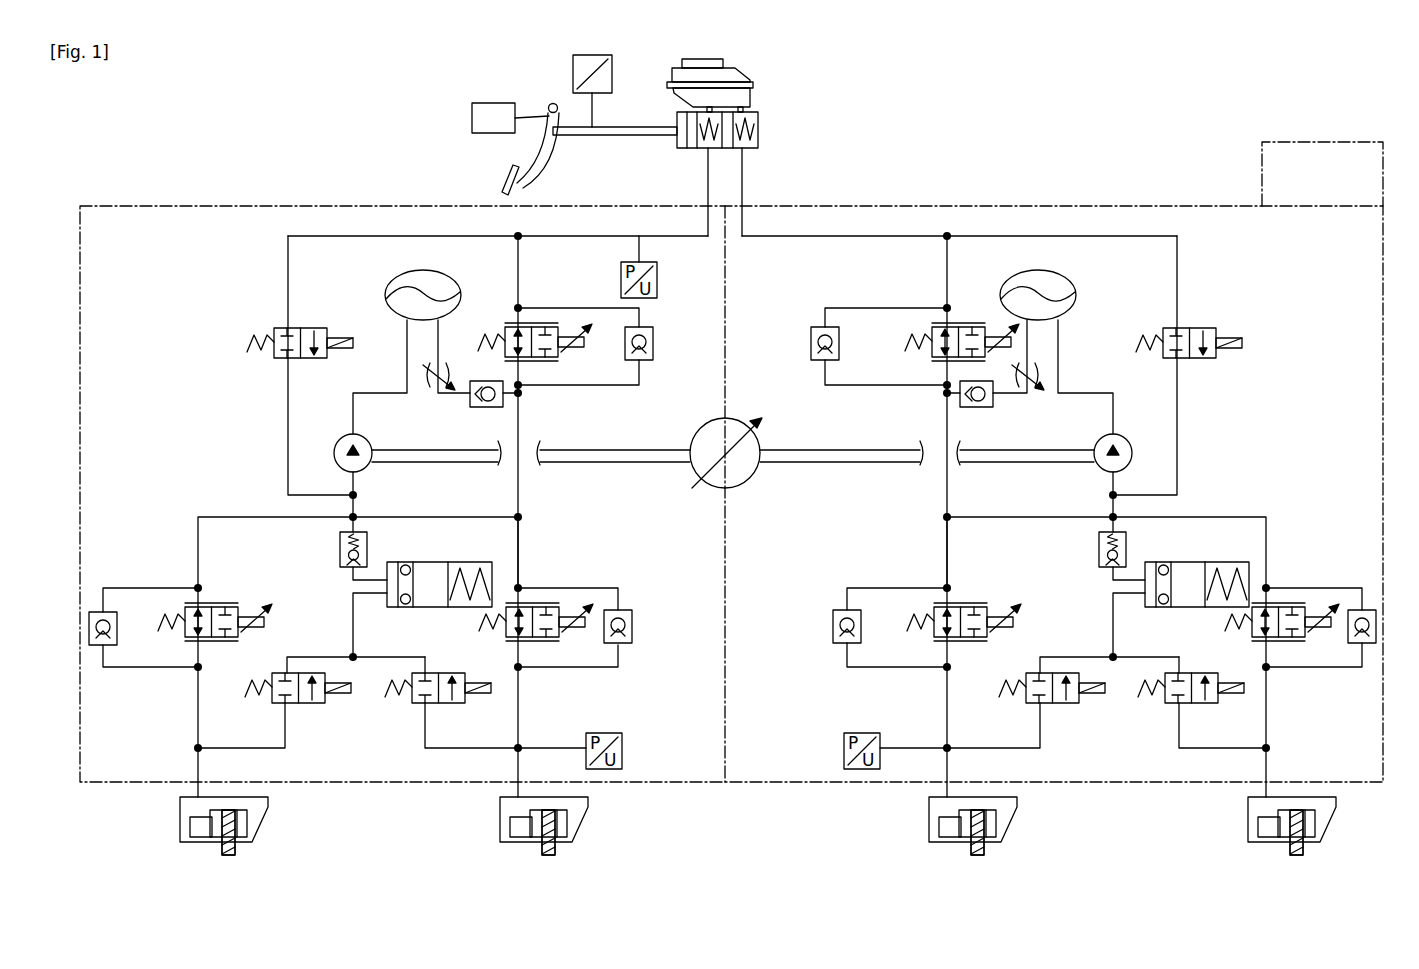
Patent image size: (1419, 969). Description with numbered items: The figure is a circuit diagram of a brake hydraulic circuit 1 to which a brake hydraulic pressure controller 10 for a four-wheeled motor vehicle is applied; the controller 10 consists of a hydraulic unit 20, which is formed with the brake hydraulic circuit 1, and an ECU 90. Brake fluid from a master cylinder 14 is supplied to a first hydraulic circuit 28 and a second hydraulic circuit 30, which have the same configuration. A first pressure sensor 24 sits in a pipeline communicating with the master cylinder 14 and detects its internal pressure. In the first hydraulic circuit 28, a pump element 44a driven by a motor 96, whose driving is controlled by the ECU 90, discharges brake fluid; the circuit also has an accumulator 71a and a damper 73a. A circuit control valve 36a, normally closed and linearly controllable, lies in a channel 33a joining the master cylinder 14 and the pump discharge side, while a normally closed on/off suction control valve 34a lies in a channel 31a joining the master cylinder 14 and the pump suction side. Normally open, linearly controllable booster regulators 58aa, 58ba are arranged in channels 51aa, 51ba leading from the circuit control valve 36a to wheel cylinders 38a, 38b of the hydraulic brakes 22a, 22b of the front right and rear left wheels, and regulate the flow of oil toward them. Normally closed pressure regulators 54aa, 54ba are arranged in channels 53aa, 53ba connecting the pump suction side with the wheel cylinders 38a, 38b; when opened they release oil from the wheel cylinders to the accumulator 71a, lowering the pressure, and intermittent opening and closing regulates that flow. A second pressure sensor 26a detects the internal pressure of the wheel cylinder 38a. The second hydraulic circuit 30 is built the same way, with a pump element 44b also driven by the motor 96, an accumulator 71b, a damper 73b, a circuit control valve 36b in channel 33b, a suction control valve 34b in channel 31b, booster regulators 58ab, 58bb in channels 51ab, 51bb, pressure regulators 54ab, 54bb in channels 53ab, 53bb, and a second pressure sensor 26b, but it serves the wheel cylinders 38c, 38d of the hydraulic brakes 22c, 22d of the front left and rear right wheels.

The brake hydraulic circuit 1 is at (1024, 82).
The brake hydraulic pressure controller 10 is at (1208, 153).
The master cylinder 14 is at (758, 123).
The hydraulic unit 20 is at (1165, 206).
The hydraulic brake 22a is at (542, 847).
The hydraulic brake 22b is at (222, 847).
The hydraulic brake 22c is at (971, 847).
The hydraulic brake 22d is at (1291, 847).
The first pressure sensor 24 is at (657, 280).
The second pressure sensor 26a is at (621, 744).
The second pressure sensor 26b is at (844, 744).
The first hydraulic circuit 28 is at (397, 221).
The second hydraulic circuit 30 is at (962, 221).
The channel 31a is at (288, 273).
The channel 31b is at (1178, 273).
The channel 33a is at (518, 273).
The channel 33b is at (946, 272).
The suction control valve 34a is at (327, 330).
The suction control valve 34b is at (1216, 330).
The circuit control valve 36a is at (505, 328).
The circuit control valve 36b is at (990, 328).
The wheel cylinder 38a is at (516, 842).
The wheel cylinder 38b is at (196, 842).
The wheel cylinder 38c is at (945, 842).
The wheel cylinder 38d is at (1265, 842).
The pump element 44a is at (366, 438).
The pump element 44b is at (1098, 438).
The channel 51aa is at (518, 541).
The channel 51ab is at (943, 541).
The channel 51ba is at (198, 541).
The channel 51bb is at (1266, 541).
The channel 53aa is at (425, 741).
The channel 53ab is at (1179, 741).
The channel 53ba is at (286, 717).
The channel 53bb is at (1041, 717).
The pressure regulator 54aa is at (464, 704).
The pressure regulator 54ab is at (1025, 704).
The pressure regulator 54ba is at (272, 704).
The pressure regulator 54bb is at (1216, 704).
The booster regulator 58aa is at (498, 640).
The booster regulator 58ab is at (927, 640).
The booster regulator 58ba is at (238, 607).
The booster regulator 58bb is at (1246, 640).
The accumulator 71a is at (439, 562).
The accumulator 71b is at (1197, 562).
The damper 73a is at (388, 292).
The damper 73b is at (1075, 288).
The ECU 90 is at (1262, 190).
The motor 96 is at (756, 478).